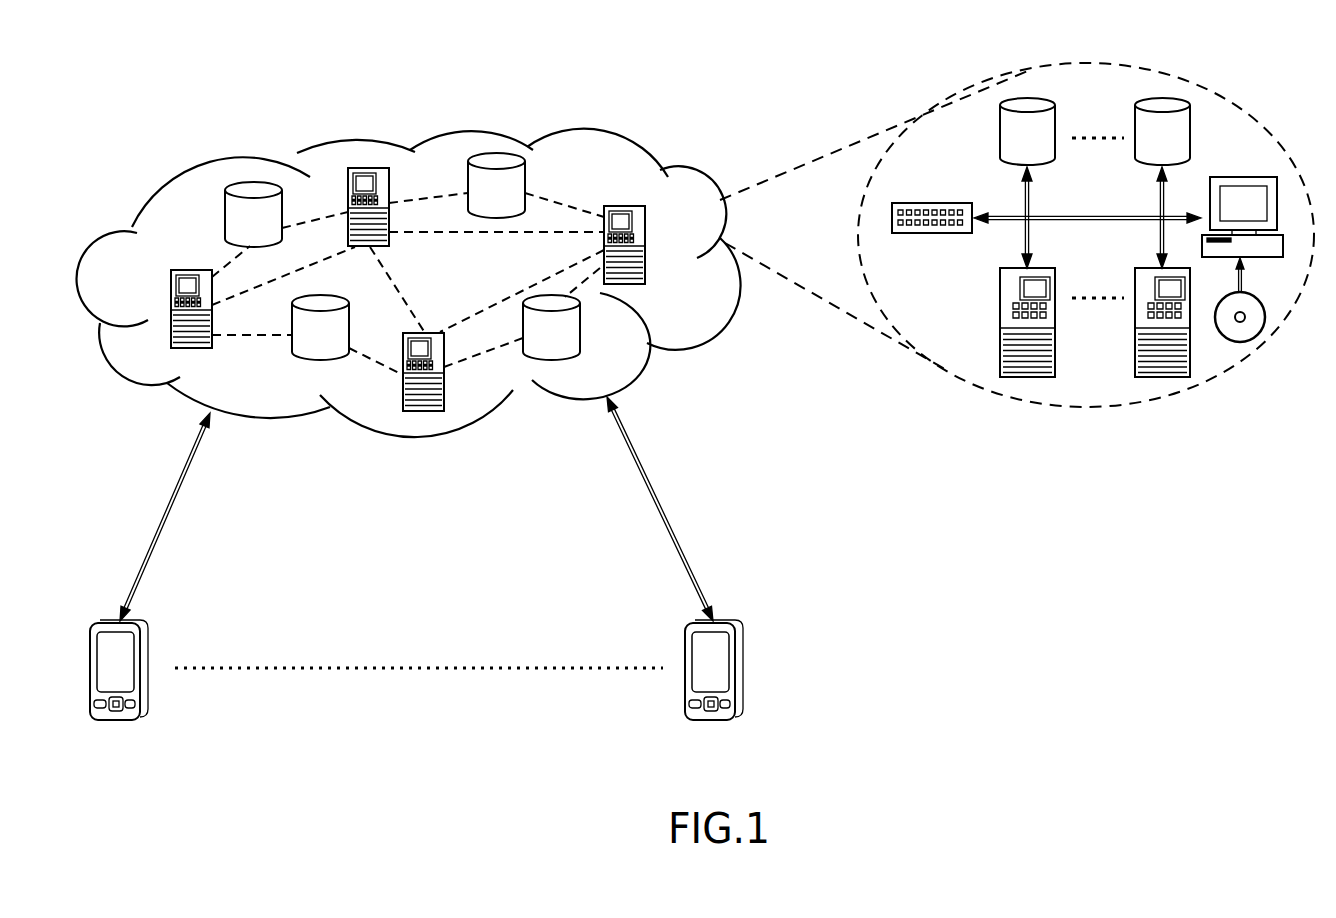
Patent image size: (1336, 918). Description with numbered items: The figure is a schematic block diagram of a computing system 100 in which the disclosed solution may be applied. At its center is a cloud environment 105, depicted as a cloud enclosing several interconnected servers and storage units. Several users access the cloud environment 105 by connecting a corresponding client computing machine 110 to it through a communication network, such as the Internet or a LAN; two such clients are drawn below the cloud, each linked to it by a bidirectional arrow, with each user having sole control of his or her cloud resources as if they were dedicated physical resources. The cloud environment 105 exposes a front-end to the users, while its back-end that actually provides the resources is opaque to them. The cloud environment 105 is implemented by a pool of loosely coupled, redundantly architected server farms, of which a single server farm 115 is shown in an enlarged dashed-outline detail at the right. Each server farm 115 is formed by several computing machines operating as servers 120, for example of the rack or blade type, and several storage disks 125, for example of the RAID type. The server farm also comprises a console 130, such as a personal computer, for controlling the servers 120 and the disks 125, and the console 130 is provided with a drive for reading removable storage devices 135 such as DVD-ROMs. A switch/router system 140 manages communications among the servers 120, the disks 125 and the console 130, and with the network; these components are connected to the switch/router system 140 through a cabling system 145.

The computing system 100 is at (1018, 650).
The cloud environment 105 is at (480, 130).
The client computing machine 110 is at (140, 720).
The server farm 115 is at (860, 225).
The server 120 is at (1008, 377).
The storage disk 125 is at (1003, 115).
The console 130 is at (1220, 178).
The removable storage device 135 is at (1242, 342).
The switch/router system 140 is at (903, 233).
The cabling system 145 is at (1143, 213).